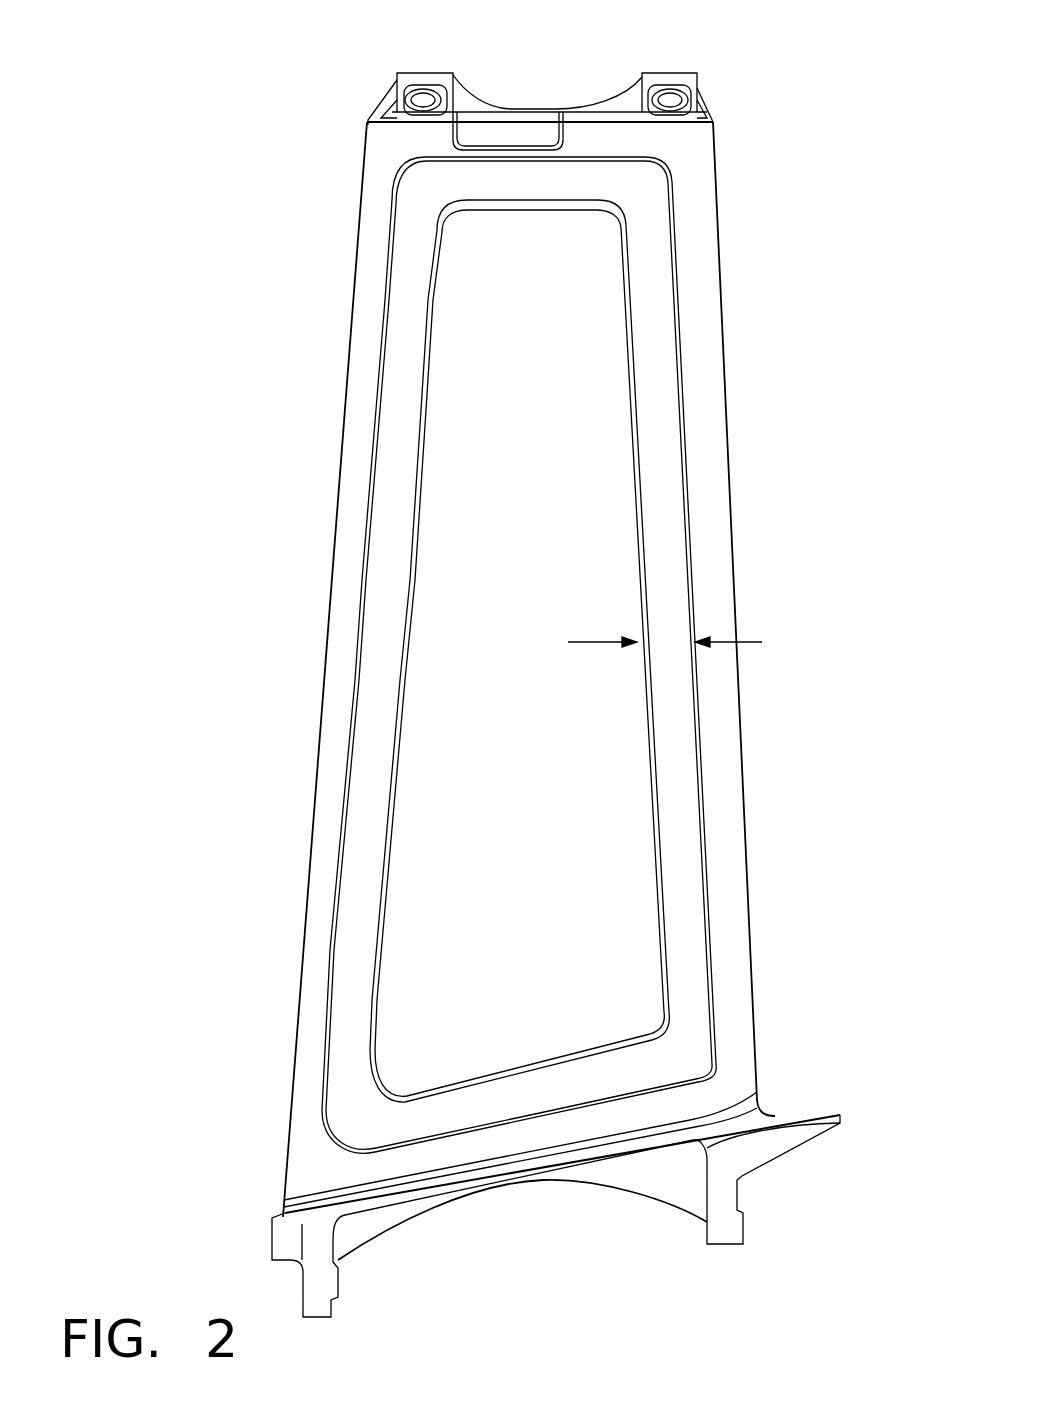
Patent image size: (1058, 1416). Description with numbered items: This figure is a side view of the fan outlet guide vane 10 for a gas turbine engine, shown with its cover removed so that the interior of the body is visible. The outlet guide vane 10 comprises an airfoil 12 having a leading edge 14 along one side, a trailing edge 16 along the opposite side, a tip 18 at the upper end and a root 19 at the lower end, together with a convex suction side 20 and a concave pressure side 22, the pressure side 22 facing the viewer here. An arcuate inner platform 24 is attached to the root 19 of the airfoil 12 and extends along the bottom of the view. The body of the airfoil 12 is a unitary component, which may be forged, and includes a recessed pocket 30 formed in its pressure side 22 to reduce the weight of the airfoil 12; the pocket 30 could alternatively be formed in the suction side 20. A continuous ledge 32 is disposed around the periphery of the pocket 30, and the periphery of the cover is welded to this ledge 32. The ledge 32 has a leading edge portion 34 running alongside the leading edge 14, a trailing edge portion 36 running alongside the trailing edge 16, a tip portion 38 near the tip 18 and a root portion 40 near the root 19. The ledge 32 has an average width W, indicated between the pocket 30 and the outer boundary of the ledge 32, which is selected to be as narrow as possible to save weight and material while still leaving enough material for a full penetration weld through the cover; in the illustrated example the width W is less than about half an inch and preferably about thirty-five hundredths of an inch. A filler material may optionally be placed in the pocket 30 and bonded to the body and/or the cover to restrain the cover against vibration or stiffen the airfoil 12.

The fan outlet guide vane 10 is at (810, 48).
The airfoil 12 is at (697, 170).
The leading edge 14 is at (355, 308).
The trailing edge 16 is at (727, 303).
The tip 18 is at (580, 117).
The root 19 is at (745, 1084).
The convex suction side 20 is at (727, 1002).
The concave pressure side 22 is at (302, 1089).
The arcuate inner platform 24 is at (577, 1180).
The recessed pocket 30 is at (540, 425).
The ledge 32 is at (665, 440).
The leading edge portion 34 is at (395, 458).
The trailing edge portion 36 is at (672, 527).
The tip portion 38 is at (427, 193).
The root portion 40 is at (678, 1057).
The average width of the ledge W is at (752, 642).